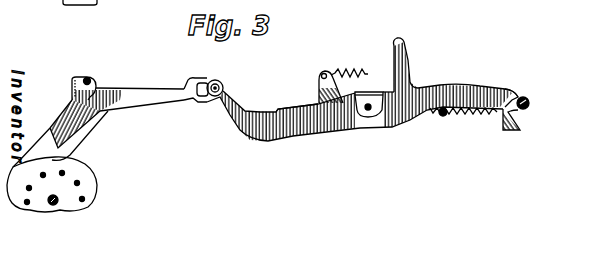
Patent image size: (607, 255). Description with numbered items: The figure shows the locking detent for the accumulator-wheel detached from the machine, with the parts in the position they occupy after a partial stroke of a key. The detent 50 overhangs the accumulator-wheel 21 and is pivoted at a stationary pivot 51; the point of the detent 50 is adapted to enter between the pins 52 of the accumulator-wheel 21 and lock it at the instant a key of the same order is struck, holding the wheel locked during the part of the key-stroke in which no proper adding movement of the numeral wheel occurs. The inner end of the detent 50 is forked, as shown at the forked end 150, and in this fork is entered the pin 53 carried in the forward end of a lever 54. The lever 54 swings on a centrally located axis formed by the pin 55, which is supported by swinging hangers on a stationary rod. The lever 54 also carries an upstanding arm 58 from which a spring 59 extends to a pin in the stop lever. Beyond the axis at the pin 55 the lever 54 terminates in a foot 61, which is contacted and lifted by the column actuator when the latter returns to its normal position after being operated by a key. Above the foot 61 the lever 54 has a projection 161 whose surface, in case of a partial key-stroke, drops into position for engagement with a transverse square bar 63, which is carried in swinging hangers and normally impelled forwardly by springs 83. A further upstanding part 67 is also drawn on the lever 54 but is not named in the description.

The mounting plate 21 is at (88, 190).
The lever arm 50 is at (116, 93).
The lug 51 is at (90, 71).
The holes 52 is at (64, 175).
The pivot pin 53 is at (223, 82).
The yoke 150 is at (198, 102).
The arm section 54 is at (288, 110).
The block 55 is at (368, 108).
The lug 58 is at (325, 70).
The spring 59 is at (343, 70).
The foot 61 is at (510, 131).
The roller 63 is at (532, 103).
The post 67 is at (412, 56).
The spring 83 is at (460, 113).
The hook 161 is at (521, 92).